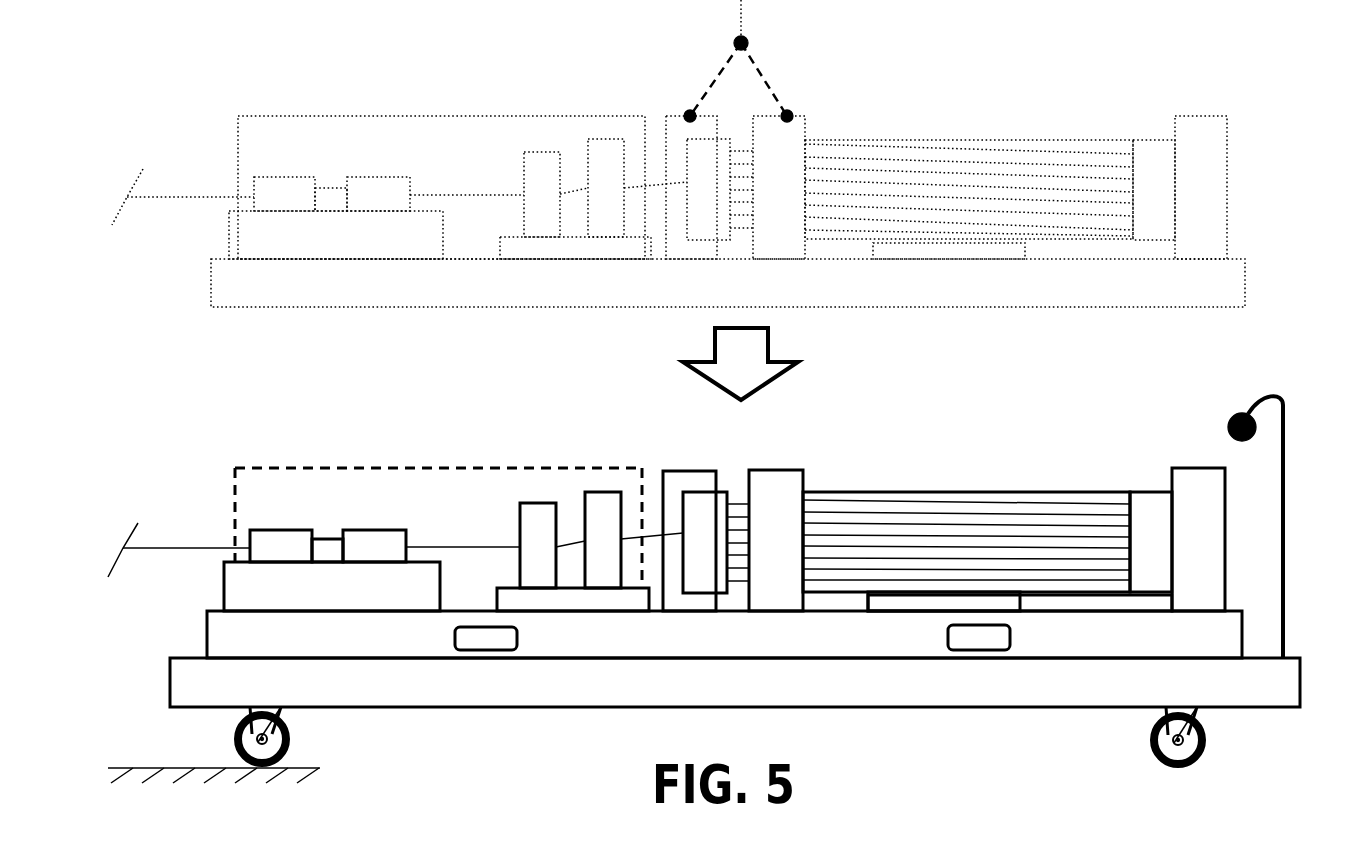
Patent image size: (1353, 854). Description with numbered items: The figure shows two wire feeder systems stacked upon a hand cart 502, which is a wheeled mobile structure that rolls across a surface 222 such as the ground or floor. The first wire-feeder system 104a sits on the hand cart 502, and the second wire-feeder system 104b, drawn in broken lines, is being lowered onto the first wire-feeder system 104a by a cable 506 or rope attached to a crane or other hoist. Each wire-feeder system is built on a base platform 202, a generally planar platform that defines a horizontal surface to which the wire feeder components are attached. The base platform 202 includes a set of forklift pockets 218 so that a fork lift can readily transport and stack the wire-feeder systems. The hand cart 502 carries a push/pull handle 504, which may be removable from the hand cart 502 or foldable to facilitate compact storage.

The first wire-feeder system 104a is at (1056, 443).
The second wire-feeder system 104b is at (1055, 113).
The base platform 202 is at (1233, 610).
The forklift pockets 218 is at (517, 637).
The surface 222 is at (147, 765).
The hand cart 502 is at (1295, 657).
The push/pull handle 504 is at (1292, 402).
The cable 506 is at (767, 80).